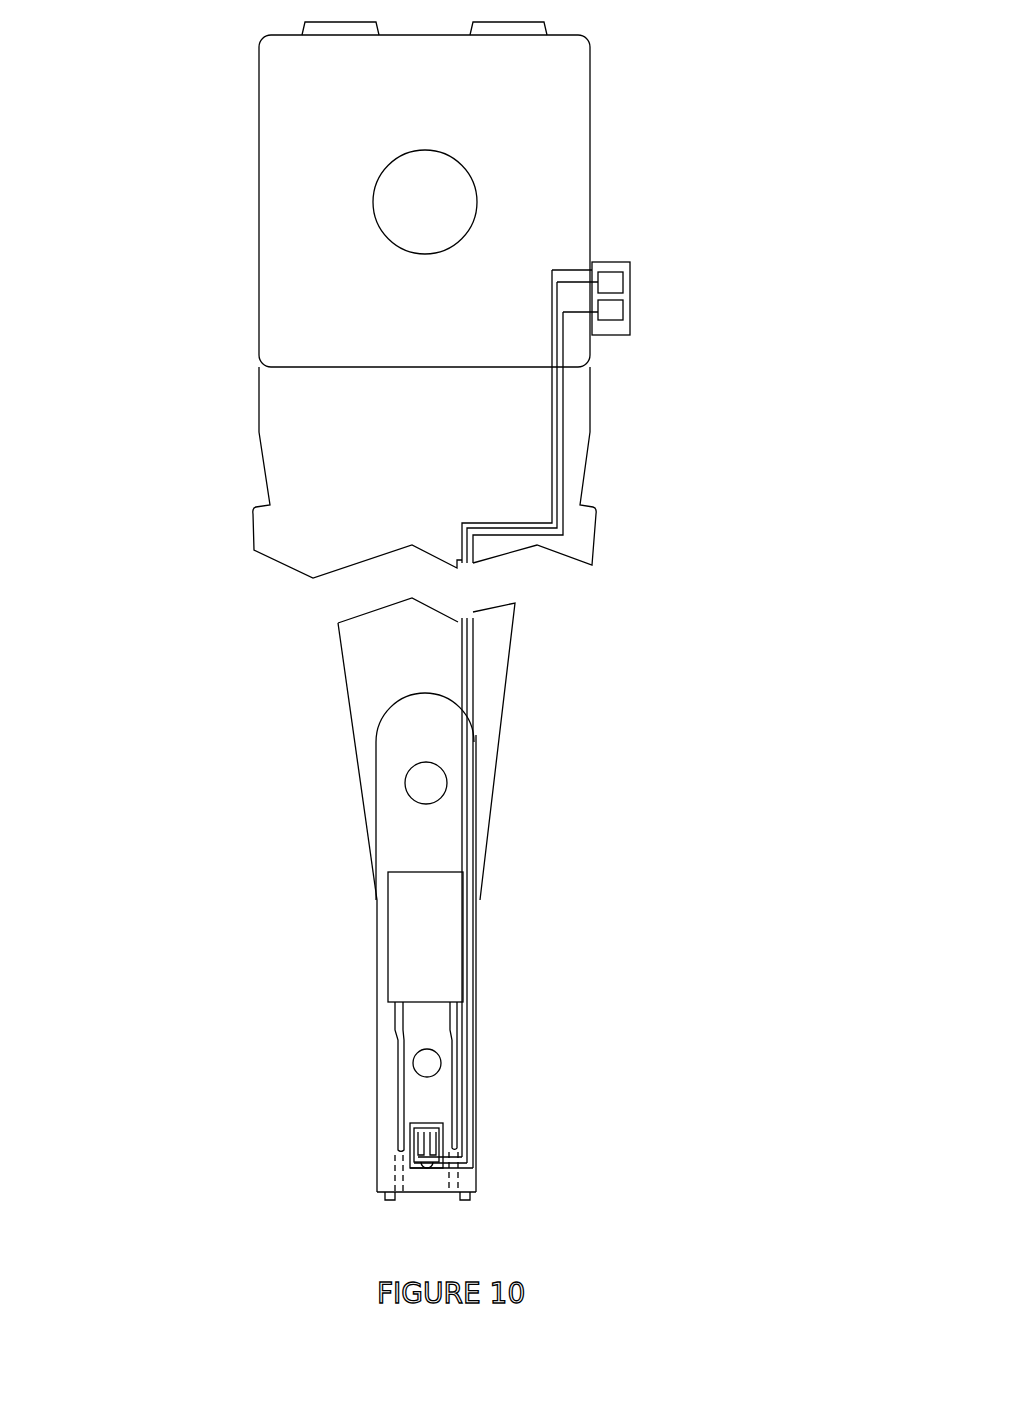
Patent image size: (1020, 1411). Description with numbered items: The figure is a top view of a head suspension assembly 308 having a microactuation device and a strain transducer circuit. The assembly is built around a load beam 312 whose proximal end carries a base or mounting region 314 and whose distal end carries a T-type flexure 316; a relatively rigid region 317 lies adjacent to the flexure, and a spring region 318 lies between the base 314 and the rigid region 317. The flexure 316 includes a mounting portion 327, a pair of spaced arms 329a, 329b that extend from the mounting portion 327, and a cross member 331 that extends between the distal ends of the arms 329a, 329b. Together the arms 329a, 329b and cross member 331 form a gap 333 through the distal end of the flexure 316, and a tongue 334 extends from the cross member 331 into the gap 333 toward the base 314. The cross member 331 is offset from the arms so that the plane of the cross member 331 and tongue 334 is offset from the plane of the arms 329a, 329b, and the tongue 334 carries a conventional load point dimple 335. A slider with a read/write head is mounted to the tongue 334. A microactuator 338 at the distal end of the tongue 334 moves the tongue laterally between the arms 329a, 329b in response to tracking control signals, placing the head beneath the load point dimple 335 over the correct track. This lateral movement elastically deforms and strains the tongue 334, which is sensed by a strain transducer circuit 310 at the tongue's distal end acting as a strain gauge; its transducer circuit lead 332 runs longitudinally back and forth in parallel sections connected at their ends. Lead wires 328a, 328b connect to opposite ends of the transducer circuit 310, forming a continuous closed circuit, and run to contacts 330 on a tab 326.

The head suspension assembly 308 is at (220, 745).
The strain transducer circuit 310 is at (440, 1135).
The load beam 312 is at (702, 720).
The base or mounting region 314 is at (590, 187).
The T-type flexure 316 is at (478, 1106).
The rigid region 317 is at (342, 662).
The spring region 318 is at (592, 438).
The tab 326 is at (612, 335).
The mounting portion 327 is at (476, 815).
The lead wire 328a is at (463, 640).
The lead wire 328b is at (473, 662).
The arm 329a is at (378, 1090).
The arm 329b is at (478, 1090).
The contacts 330 is at (625, 312).
The cross member 331 is at (430, 1193).
The transducer circuit lead 332 is at (408, 1138).
The gap 333 is at (397, 1128).
The tongue 334 is at (450, 1013).
The load point dimple 335 is at (442, 1063).
The microactuator 338 is at (388, 937).